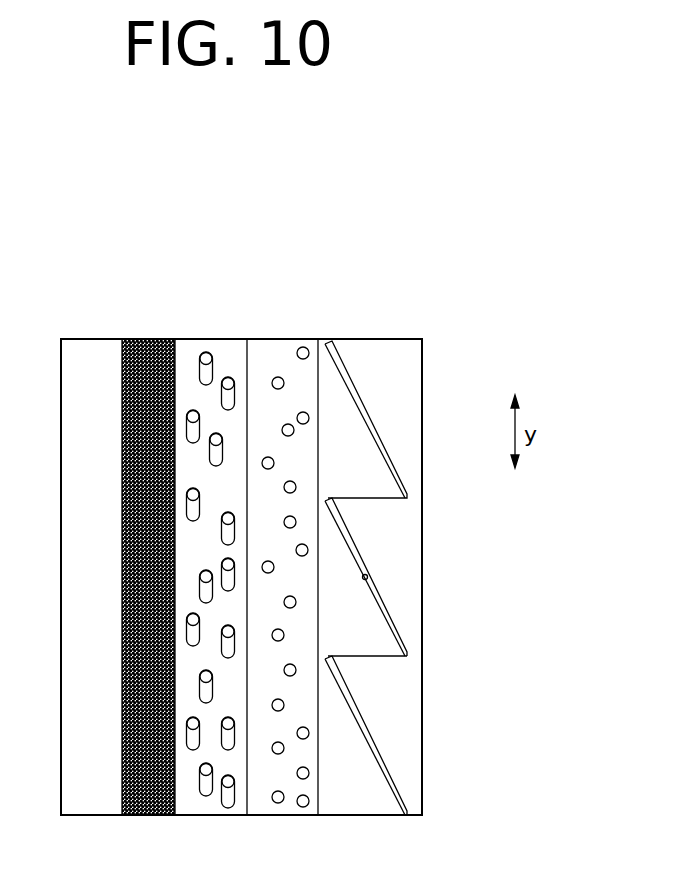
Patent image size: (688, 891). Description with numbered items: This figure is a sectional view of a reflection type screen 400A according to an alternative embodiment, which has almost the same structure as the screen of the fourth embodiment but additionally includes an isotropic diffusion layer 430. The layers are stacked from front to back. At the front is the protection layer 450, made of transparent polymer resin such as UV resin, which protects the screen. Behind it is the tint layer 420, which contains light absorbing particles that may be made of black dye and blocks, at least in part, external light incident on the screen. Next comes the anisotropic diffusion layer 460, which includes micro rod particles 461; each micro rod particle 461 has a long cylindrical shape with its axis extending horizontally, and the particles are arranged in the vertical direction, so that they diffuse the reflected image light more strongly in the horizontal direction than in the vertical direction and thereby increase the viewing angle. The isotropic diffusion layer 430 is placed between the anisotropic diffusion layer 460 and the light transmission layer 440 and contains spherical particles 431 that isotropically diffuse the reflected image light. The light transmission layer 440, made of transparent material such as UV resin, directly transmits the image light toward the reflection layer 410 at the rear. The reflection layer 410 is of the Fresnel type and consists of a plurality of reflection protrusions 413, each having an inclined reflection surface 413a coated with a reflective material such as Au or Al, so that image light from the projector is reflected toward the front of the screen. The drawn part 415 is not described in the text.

The reflection type screen 400A is at (289, 197).
The reflection layer 410 is at (377, 325).
The reflection protrusions 413 is at (377, 537).
The inclined reflection surface 413a is at (368, 576).
The prism base 415 is at (387, 625).
The tint layer 420 is at (144, 325).
The isotropic diffusion layer 430 is at (278, 325).
The spherical particles 431 is at (278, 803).
The light transmission layer 440 is at (328, 375).
The protection layer 450 is at (82, 325).
The anisotropic diffusion layer 460 is at (212, 325).
The micro rod particles 461 is at (208, 783).